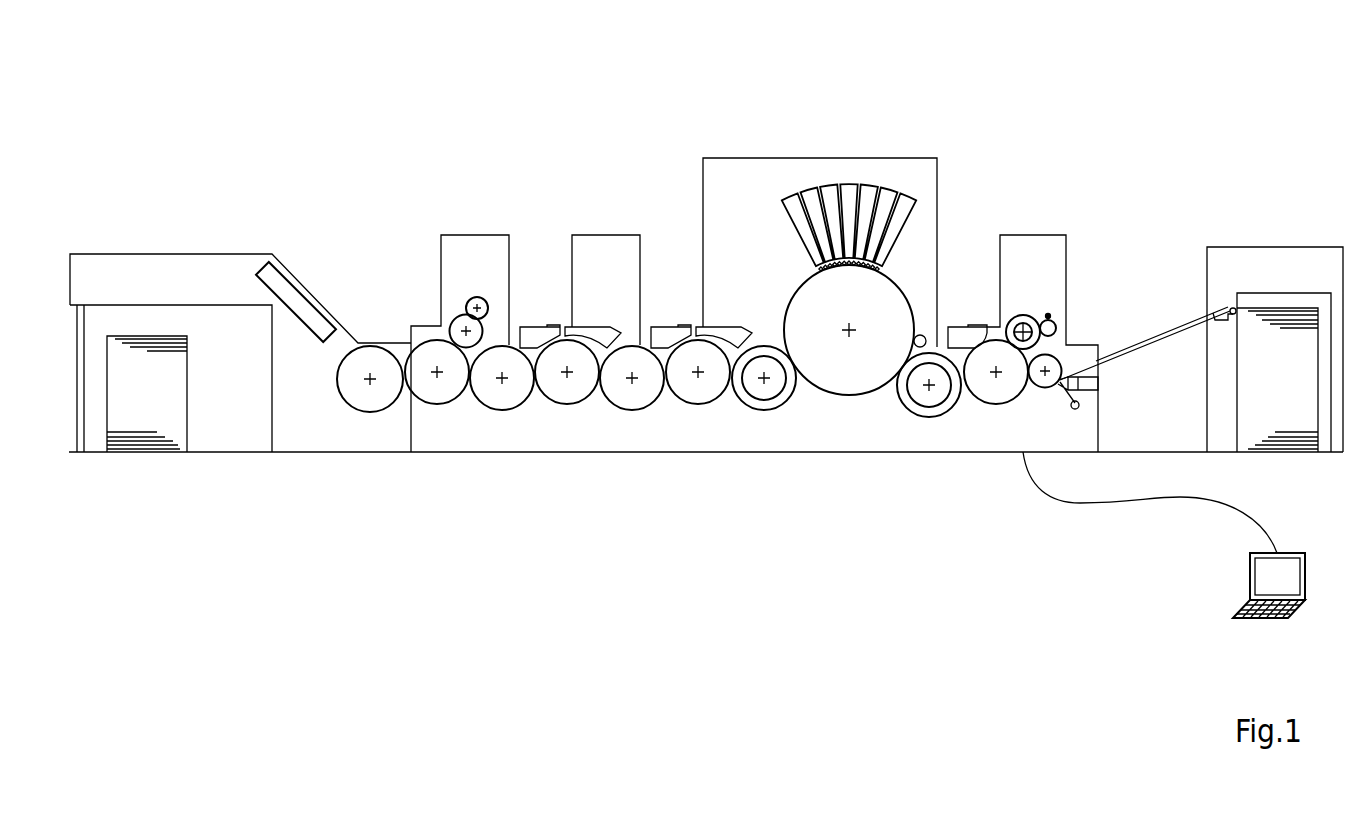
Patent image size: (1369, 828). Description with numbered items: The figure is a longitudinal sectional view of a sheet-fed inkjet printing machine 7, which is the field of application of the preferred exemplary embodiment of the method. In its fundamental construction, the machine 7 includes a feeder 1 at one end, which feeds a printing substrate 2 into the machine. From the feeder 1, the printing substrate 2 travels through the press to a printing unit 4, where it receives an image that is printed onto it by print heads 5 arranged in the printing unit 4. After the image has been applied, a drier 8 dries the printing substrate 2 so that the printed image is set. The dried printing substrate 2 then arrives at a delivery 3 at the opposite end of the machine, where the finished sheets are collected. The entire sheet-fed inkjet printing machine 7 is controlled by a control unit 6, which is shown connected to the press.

The feeder 1 is at (182, 278).
The printing substrate 2 is at (897, 287).
The delivery 3 is at (1287, 308).
The printing unit 4 is at (763, 159).
The print heads 5 is at (848, 183).
The control unit 6 is at (1250, 575).
The inkjet printing machine 7 is at (1146, 82).
The drier 8 is at (960, 330).